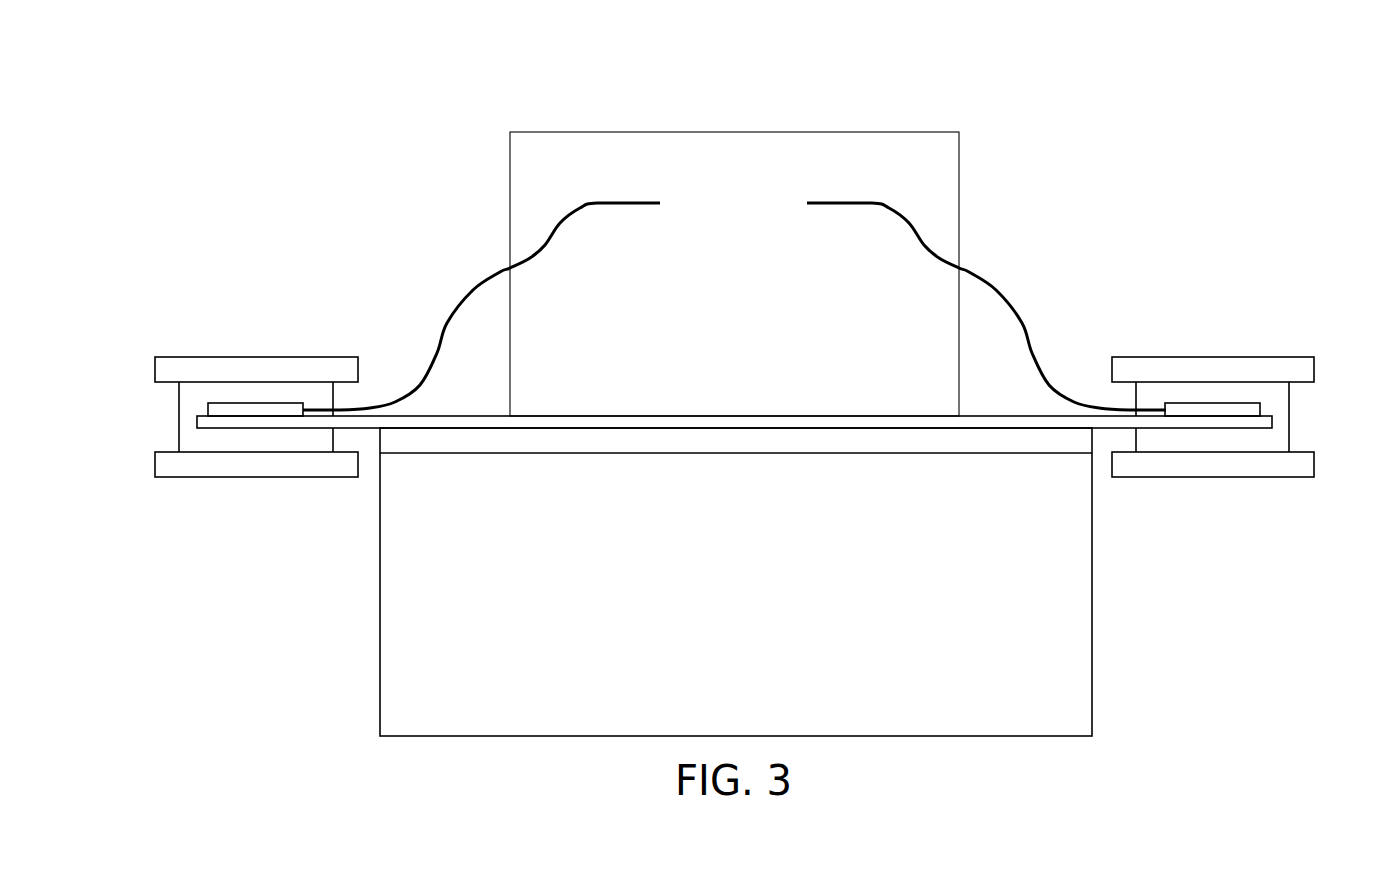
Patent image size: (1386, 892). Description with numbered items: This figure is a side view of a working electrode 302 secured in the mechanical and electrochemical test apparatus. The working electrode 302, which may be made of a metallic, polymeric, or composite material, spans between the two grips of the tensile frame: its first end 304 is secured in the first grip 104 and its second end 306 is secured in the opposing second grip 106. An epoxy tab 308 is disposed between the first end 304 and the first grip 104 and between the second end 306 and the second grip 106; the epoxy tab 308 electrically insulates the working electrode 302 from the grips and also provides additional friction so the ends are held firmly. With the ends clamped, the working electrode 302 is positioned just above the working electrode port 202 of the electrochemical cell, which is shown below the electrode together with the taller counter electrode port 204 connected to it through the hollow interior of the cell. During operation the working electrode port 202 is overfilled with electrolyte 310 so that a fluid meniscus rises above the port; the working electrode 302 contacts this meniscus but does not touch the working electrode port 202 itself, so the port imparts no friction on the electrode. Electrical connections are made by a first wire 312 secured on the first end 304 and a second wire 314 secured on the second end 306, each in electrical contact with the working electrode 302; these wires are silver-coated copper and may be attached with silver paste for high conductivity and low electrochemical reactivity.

The first grip 104 is at (1214, 478).
The second grip 106 is at (255, 478).
The working electrode port 202 is at (388, 593).
The counter electrode port 204 is at (732, 142).
The working electrode 302 is at (733, 415).
The first end 304 is at (1212, 400).
The second end 306 is at (257, 400).
The epoxy tab 308 is at (185, 416).
The electrolyte 310 is at (733, 455).
The first wire 312 is at (838, 200).
The second wire 314 is at (630, 200).